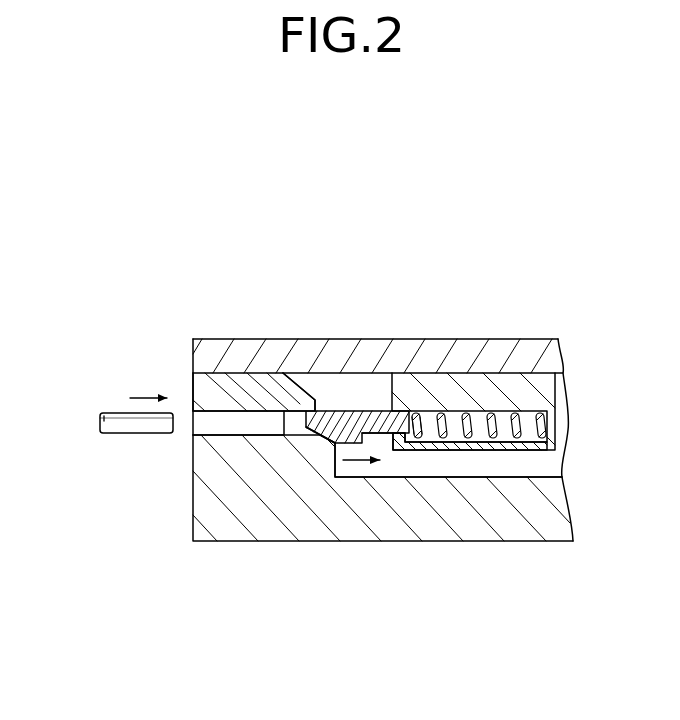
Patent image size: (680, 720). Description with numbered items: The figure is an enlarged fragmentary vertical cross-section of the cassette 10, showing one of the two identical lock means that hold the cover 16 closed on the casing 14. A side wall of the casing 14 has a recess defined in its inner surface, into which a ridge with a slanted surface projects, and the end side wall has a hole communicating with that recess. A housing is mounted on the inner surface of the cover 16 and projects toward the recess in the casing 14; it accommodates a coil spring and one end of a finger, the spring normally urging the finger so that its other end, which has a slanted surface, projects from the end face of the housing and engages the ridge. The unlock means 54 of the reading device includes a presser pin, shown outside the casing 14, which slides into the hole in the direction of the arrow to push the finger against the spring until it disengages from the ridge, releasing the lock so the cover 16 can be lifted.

The cassette 10 is at (230, 545).
The casing 14 is at (500, 535).
The cover 16 is at (505, 339).
The unlock means 54 is at (113, 438).